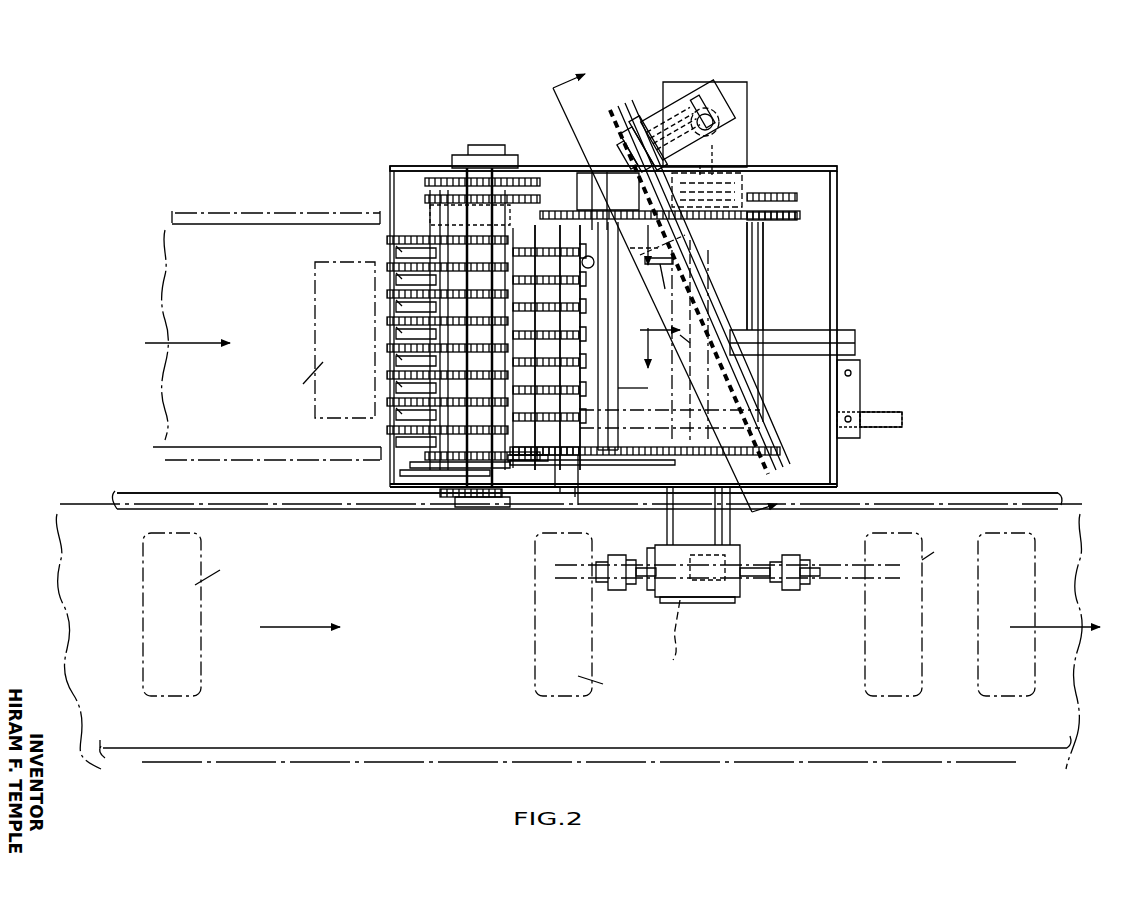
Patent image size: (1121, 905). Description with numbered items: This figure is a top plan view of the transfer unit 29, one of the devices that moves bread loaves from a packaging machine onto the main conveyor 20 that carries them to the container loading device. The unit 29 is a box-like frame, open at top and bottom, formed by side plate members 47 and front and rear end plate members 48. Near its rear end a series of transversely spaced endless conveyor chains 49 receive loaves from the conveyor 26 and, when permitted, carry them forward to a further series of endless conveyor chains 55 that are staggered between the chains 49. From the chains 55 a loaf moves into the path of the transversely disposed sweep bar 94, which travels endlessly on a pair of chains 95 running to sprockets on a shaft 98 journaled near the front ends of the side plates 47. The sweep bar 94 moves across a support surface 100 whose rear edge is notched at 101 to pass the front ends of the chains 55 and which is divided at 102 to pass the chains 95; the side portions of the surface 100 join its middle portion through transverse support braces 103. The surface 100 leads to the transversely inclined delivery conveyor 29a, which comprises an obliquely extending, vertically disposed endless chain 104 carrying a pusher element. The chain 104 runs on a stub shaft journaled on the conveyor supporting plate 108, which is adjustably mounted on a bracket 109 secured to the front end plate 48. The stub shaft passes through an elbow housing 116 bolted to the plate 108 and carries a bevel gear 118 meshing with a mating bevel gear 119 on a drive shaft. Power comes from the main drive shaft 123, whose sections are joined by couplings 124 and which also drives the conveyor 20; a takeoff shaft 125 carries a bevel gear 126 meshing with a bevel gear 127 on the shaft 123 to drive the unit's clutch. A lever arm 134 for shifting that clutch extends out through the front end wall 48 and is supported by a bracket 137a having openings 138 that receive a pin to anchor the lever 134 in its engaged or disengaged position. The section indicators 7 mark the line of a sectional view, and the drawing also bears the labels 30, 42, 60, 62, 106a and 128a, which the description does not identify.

The section line 7- 7 is at (679, 287).
The main conveyor 20 is at (122, 750).
The conveyor 26 is at (222, 200).
The transfer unit 29 is at (843, 242).
The delivery conveyor 29a is at (683, 328).
The outfeed conveyor 30 is at (1048, 743).
The guide rail 42 is at (962, 495).
The side plate members 47 is at (810, 166).
The end plate members 48 is at (840, 193).
The endless conveyor chains 49 is at (417, 238).
The endless conveyor chains 55 is at (546, 250).
The sprocket 60 is at (398, 256).
The flight bar 62 is at (522, 248).
The transfer bar 94 is at (608, 477).
The endless chains 95 is at (535, 185).
The shaft 98 is at (763, 318).
The support surface 100 is at (730, 168).
The notch 101 is at (668, 336).
The division 102 is at (595, 150).
The transverse support braces 103 is at (714, 275).
The endless chain 104 is at (756, 390).
The pusher bracket 106a is at (666, 277).
The conveyor supporting plate 108 is at (758, 306).
The bracket 109 is at (795, 338).
The elbow housing 116 is at (646, 100).
The bevel gear 118 is at (693, 100).
The bevel gear 119 is at (718, 126).
The main drive shaft 123 is at (807, 558).
The couplings 124 is at (619, 591).
The takeoff shaft 125 is at (666, 532).
The bevel gear 126 is at (735, 555).
The bevel gear 127 is at (685, 638).
The sprocket 128a is at (520, 489).
The lever arm 134 is at (885, 413).
The bracket 137a is at (858, 394).
The openings 138 is at (852, 372).